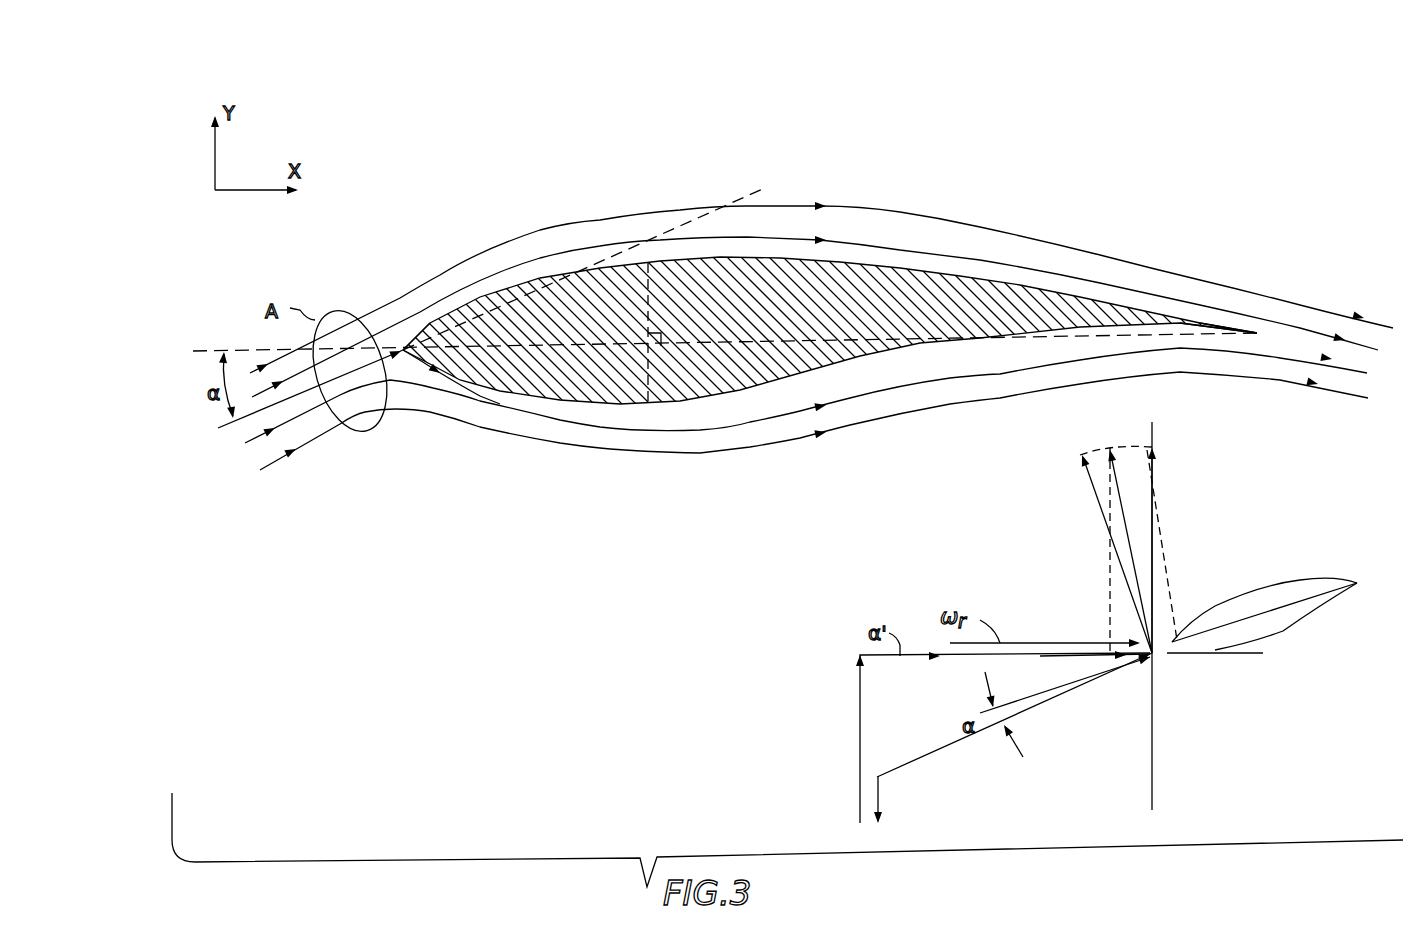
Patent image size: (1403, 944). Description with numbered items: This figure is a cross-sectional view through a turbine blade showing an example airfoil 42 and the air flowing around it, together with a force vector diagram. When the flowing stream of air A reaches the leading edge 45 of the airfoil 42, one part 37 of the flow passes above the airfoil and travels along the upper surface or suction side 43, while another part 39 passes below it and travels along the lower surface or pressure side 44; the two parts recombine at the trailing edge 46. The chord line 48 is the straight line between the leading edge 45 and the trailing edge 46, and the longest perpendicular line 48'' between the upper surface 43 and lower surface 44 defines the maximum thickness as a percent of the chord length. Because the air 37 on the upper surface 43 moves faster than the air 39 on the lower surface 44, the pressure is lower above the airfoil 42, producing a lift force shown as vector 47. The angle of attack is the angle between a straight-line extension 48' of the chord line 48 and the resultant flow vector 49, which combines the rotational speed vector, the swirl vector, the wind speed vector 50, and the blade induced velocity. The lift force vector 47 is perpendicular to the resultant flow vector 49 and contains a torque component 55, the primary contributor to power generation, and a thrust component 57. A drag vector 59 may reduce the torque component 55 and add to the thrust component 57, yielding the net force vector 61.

The upper part of the air flow 37 is at (540, 233).
The lower part of the air flow 39 is at (553, 413).
The airfoil 42 is at (1020, 266).
The upper surface or suction side 43 is at (893, 263).
The lower surface or pressure side 44 is at (700, 405).
The leading edge 45 is at (401, 345).
The trailing edge 46 is at (1257, 333).
The lift force vector 47 is at (1093, 488).
The chord line 48 is at (788, 398).
The straight-line extension of the chord line 48' is at (669, 496).
The longest perpendicular line 48'' is at (622, 278).
The resultant flow vector 49 is at (223, 428).
The wind speed vector 50 is at (860, 717).
The torque component 55 is at (1087, 658).
The thrust component 57 is at (1152, 494).
The drag vector 59 is at (1170, 658).
The net force vector 61 is at (1130, 551).